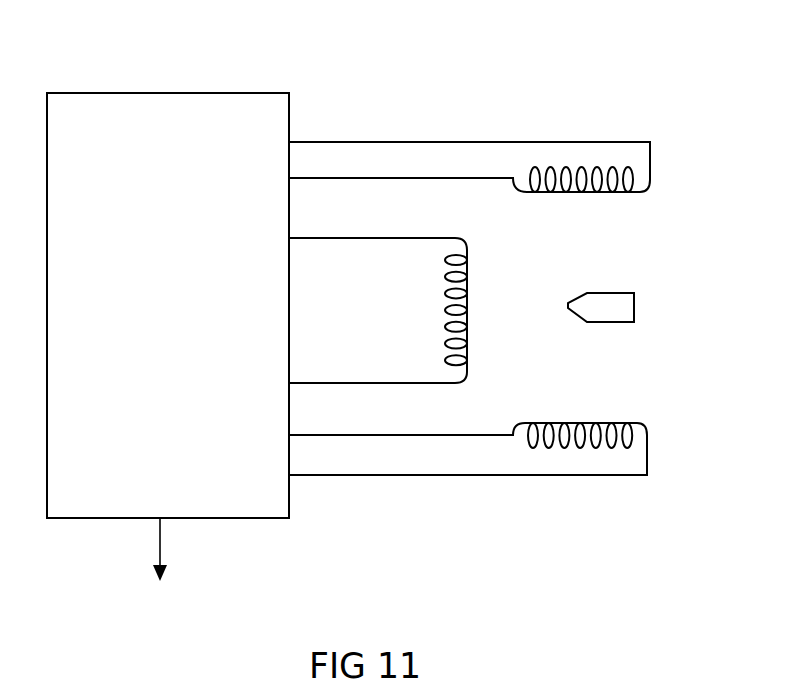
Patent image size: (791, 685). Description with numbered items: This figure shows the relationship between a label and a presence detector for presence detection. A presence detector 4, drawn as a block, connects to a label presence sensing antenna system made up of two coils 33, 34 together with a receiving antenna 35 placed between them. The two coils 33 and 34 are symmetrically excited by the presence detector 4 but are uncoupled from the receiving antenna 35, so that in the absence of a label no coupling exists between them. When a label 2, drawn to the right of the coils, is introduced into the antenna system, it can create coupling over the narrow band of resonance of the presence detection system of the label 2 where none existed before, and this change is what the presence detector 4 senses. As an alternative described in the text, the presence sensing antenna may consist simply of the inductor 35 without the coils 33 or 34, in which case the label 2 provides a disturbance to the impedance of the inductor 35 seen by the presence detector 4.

The presence detector 4 is at (138, 92).
The coil 33 is at (567, 177).
The receiving antenna 35 is at (447, 298).
The coil 34 is at (597, 450).
The label 2 is at (635, 308).